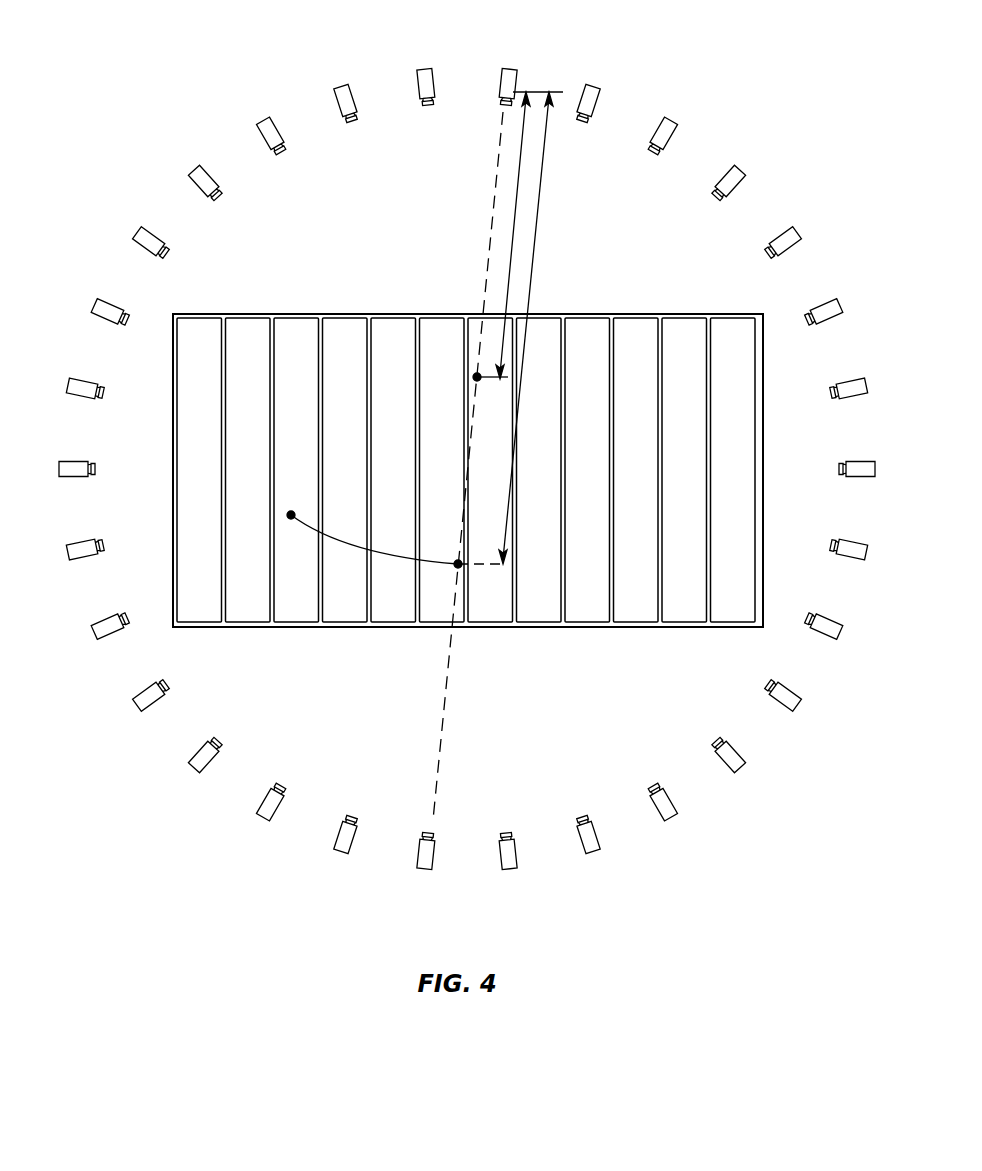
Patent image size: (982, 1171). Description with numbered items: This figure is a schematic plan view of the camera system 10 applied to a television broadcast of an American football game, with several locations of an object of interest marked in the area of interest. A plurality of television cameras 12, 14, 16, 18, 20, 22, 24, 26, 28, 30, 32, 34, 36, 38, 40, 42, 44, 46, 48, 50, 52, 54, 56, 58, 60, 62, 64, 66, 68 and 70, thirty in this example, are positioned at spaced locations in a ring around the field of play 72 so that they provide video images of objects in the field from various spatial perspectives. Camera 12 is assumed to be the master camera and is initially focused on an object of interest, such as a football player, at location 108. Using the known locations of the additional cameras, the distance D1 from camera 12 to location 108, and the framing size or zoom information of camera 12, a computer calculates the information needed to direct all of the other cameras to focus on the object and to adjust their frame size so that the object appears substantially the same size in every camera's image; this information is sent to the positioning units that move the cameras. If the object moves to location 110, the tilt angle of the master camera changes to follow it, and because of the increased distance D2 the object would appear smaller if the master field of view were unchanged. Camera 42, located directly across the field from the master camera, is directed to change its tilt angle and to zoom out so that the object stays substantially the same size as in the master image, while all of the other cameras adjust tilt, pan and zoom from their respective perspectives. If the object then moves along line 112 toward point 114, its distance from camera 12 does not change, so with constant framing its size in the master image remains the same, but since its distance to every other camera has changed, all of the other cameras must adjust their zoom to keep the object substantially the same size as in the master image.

The camera system 10 is at (374, 233).
The television camera 12 is at (510, 69).
The television camera 14 is at (593, 87).
The television camera 16 is at (671, 121).
The television camera 18 is at (740, 170).
The television camera 20 is at (797, 233).
The television camera 22 is at (840, 305).
The television camera 24 is at (866, 385).
The television camera 26 is at (875, 469).
The television camera 28 is at (866, 553).
The television camera 30 is at (840, 633).
The television camera 32 is at (797, 705).
The television camera 34 is at (740, 768).
The television camera 36 is at (671, 817).
The television camera 38 is at (593, 851).
The television camera 40 is at (510, 869).
The television camera 42 is at (424, 869).
The television camera 44 is at (341, 851).
The television camera 46 is at (263, 817).
The television camera 48 is at (194, 768).
The television camera 50 is at (137, 705).
The television camera 52 is at (94, 633).
The television camera 54 is at (68, 553).
The television camera 56 is at (59, 469).
The television camera 58 is at (68, 385).
The television camera 60 is at (94, 305).
The television camera 62 is at (137, 233).
The television camera 64 is at (194, 170).
The television camera 66 is at (263, 121).
The television camera 68 is at (341, 87).
The television camera 70 is at (424, 69).
The field of play 72 is at (343, 657).
The location 108 is at (462, 377).
The location 110 is at (456, 565).
The line 112 is at (361, 545).
The point 114 is at (291, 515).
The distance D1 is at (518, 168).
The distance D2 is at (538, 214).